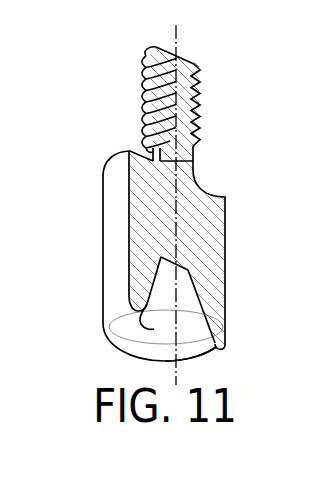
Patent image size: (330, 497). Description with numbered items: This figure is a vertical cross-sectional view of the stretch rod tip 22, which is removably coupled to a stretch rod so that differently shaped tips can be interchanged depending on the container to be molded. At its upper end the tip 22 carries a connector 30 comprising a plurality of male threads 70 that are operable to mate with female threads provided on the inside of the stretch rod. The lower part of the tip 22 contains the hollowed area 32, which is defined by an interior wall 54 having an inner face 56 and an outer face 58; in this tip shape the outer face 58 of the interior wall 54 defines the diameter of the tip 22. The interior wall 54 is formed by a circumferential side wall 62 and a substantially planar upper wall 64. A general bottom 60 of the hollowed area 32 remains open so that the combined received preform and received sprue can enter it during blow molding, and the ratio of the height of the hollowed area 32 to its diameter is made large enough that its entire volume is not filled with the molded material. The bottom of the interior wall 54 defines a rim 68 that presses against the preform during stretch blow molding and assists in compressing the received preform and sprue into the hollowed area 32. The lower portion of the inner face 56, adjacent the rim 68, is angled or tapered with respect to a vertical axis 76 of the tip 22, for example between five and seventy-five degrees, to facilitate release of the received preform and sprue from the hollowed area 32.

The stretch rod tip 22 is at (89, 163).
The connector 30 is at (200, 102).
The male threads 70 is at (142, 86).
The vertical axis 76 is at (177, 34).
The hollowed area 32 is at (178, 323).
The outer face 58 is at (120, 261).
The interior wall 54 is at (148, 280).
The upper wall 64 is at (187, 266).
The circumferential side wall 62 is at (192, 297).
The bottom 60 is at (163, 327).
The inner face 56 is at (143, 320).
The rim 68 is at (203, 352).